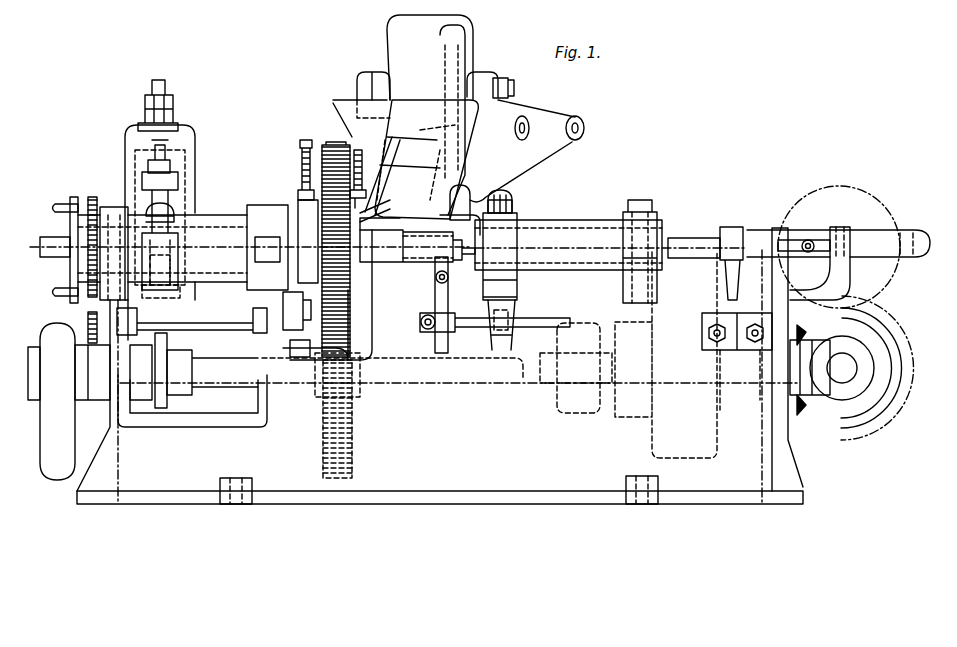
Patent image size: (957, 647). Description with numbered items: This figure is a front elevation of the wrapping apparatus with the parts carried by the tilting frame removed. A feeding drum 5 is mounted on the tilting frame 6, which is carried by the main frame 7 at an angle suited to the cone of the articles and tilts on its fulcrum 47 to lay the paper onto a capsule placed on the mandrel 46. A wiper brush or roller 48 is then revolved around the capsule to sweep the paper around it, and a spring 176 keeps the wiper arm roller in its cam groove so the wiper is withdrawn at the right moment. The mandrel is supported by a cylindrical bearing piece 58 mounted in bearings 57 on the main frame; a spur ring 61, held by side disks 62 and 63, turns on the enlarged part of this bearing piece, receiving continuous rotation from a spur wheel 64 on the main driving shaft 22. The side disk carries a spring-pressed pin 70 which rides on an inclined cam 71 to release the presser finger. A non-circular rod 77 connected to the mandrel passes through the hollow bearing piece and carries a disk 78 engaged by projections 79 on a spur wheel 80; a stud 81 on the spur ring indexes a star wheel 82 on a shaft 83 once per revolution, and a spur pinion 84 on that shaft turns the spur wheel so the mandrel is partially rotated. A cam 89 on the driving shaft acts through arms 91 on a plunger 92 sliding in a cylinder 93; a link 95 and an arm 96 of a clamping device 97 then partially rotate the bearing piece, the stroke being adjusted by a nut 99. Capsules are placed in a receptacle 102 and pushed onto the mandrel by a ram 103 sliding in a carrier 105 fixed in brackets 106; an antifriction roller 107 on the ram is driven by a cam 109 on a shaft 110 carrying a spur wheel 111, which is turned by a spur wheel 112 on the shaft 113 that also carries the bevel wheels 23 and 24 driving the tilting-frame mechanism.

The feeding drum 5 is at (426, 117).
The tilting frame 6 is at (458, 153).
The main frame 7 is at (440, 366).
The main driving shaft 22 is at (382, 382).
The bevel transmission gear 23 is at (800, 412).
The bevel wheel 24 is at (880, 390).
The mandrel 46 is at (380, 256).
The fulcrum 47 is at (513, 205).
The wiper brush or roller 48 is at (380, 202).
The bearings 57 is at (112, 207).
The cylindrical bearing piece 58 is at (210, 230).
The spur ring 61 is at (328, 143).
The side disk 62 is at (340, 312).
The side disk 63 is at (323, 278).
The spur wheel 64 is at (352, 452).
The spring-pressed pin 70 is at (302, 168).
The inclined surface or cam 71 is at (300, 212).
The rod 77 is at (42, 252).
The disk 78 is at (70, 236).
The projections 79 is at (55, 208).
The spur wheel 80 is at (92, 198).
The stud or projection 81 is at (305, 346).
The star wheel 82 is at (300, 311).
The shaft 83 is at (192, 330).
The spur pinion 84 is at (88, 330).
The cam 89 is at (160, 94).
The arms 91 is at (172, 290).
The plunger 92 is at (196, 156).
The cylinder 93 is at (135, 150).
The link 95 is at (165, 146).
The arm 96 is at (175, 196).
The clamping device 97 is at (175, 272).
The nut 99 is at (146, 108).
The receptacle 102 is at (429, 305).
The ram or pusher 103 is at (700, 227).
The carrier 105 is at (558, 222).
The brackets 106 is at (518, 280).
The antifriction roller 107 is at (800, 238).
The cam 109 is at (882, 258).
The shaft 110 is at (858, 235).
The spur wheel 111 is at (852, 187).
The spur wheel 112 is at (862, 420).
The shaft 113 is at (845, 368).
The spring 176 is at (358, 172).